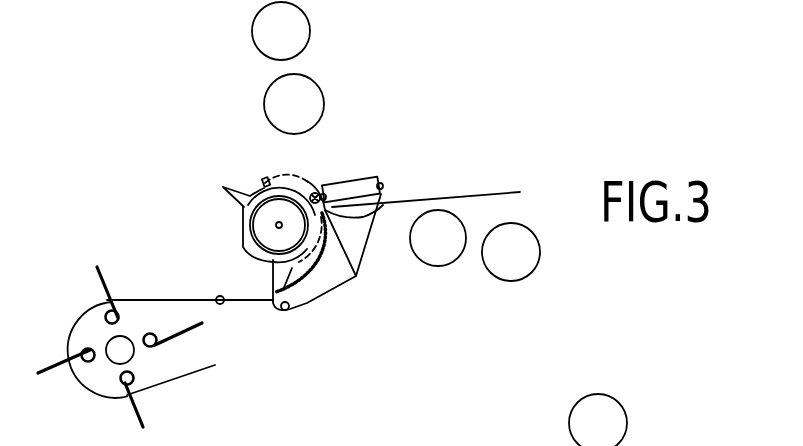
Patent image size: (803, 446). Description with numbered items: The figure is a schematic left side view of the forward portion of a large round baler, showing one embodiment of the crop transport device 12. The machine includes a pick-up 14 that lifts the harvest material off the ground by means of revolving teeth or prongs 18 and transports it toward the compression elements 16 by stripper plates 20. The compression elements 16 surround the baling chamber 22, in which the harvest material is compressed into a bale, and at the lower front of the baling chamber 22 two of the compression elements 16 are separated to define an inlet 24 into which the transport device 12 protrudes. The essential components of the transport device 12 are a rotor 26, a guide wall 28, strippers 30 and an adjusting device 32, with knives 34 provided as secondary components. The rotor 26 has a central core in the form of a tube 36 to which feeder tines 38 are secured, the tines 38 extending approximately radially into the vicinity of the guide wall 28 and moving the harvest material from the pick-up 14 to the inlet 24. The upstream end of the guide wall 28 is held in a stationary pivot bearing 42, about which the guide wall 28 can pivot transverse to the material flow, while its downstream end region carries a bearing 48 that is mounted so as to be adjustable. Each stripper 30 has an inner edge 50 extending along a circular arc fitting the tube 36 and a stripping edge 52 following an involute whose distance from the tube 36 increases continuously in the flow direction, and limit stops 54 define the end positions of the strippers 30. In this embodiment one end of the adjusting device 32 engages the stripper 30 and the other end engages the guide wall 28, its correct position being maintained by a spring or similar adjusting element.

The crop transport device 12 is at (178, 155).
The pick-up 14 is at (178, 403).
The compression elements 16 is at (280, 78).
The teeth or prongs 18 is at (57, 370).
The stripper plates 20 is at (177, 298).
The baling chamber 22 is at (598, 101).
The inlet 24 is at (387, 275).
The rotor 26 is at (229, 231).
The guide wall 28 is at (247, 303).
The strippers 30 is at (284, 275).
The adjusting device 32 is at (355, 182).
The knives 34 is at (345, 285).
The tube 36 is at (266, 187).
The feeder tines 38 is at (225, 185).
The pivot bearing 42 is at (222, 295).
The bearing 48 is at (381, 186).
The edge 50 is at (307, 195).
The stripping edge 52 is at (443, 186).
The limit stops 54 is at (311, 195).